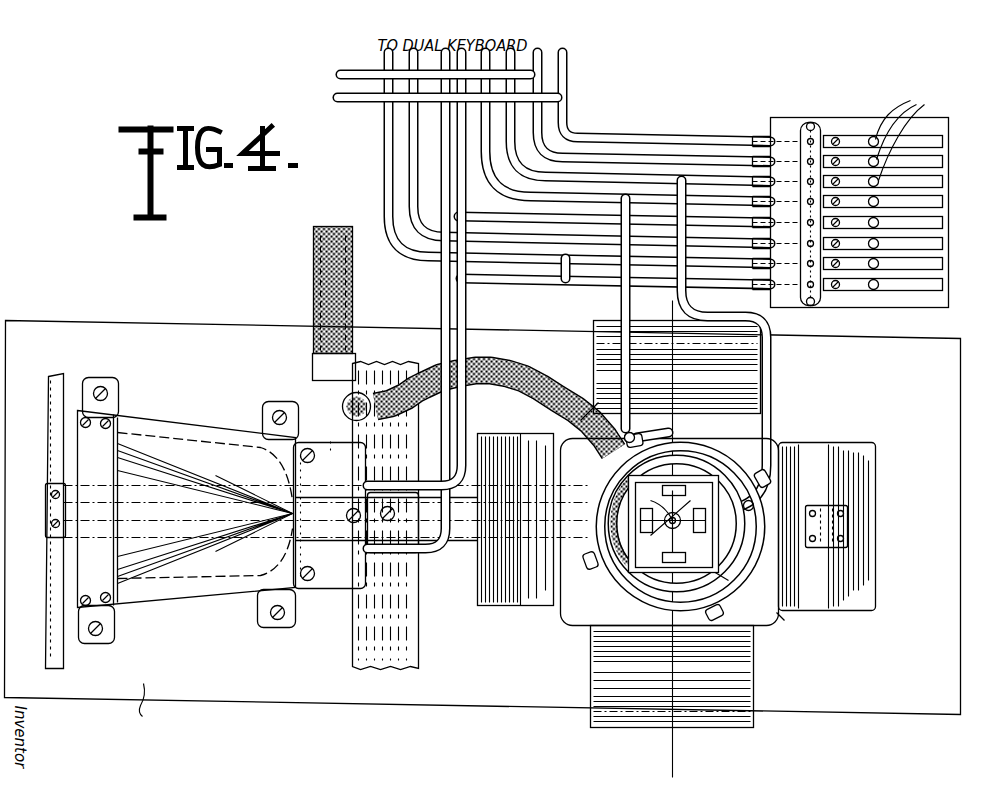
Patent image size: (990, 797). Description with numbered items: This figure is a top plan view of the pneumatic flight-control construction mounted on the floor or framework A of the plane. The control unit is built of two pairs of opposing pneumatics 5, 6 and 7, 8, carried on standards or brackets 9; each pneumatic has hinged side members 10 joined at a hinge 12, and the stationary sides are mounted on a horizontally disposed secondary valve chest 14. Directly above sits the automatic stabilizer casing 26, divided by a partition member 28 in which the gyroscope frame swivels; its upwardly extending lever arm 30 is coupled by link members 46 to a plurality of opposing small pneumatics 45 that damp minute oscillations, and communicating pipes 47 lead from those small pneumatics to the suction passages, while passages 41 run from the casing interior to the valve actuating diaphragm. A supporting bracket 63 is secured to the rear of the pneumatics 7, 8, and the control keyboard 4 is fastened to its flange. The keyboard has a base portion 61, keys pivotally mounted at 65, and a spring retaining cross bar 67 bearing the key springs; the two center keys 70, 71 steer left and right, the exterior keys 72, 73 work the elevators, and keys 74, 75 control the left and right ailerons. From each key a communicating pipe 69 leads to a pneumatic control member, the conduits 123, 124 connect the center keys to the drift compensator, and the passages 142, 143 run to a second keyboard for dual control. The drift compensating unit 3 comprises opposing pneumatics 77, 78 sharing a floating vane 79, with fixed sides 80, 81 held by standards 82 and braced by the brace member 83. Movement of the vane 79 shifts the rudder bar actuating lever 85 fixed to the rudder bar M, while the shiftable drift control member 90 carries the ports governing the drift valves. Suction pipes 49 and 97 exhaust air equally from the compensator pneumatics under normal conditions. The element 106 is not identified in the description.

The passage 142 is at (347, 72).
The passage 143 is at (344, 97).
The communicating pipe 69 is at (545, 73).
The conduit 123 is at (438, 298).
The conduit 124 is at (463, 299).
The control keyboard 4 is at (942, 120).
The base portion 61 is at (862, 120).
The pivot 65 is at (900, 116).
The spring retaining cross bar 67 is at (805, 195).
The key 73 is at (945, 183).
The key 75 is at (945, 203).
The key 71 is at (944, 225).
The key 70 is at (944, 245).
The key 74 is at (944, 265).
The key 72 is at (944, 286).
The hinged side member 10 is at (756, 292).
The pneumatic 8 is at (662, 306).
The pneumatic 5 is at (722, 357).
The hinge 12 is at (768, 432).
The pipe 49 is at (330, 232).
The pipe 97 is at (315, 440).
The rudder bar M is at (368, 650).
The framework A is at (140, 709).
The drift compensating unit 3 is at (148, 427).
The brace member 83 is at (80, 452).
The drift control member 90 is at (55, 485).
The support bar 106 is at (48, 414).
The standard 82 is at (100, 379).
The fixed side 81 is at (246, 440).
The fixed side 80 is at (198, 598).
The pneumatic 78 is at (170, 440).
The pneumatic 77 is at (164, 590).
The rudder bar actuating lever 85 is at (190, 488).
The floating vane 79 is at (228, 497).
The pneumatic 7 is at (498, 602).
The pneumatic 6 is at (590, 676).
The bracket 9 is at (778, 438).
The secondary valve chest 14 is at (786, 620).
The supporting bracket 63 is at (838, 522).
The communicating pipe 47 is at (685, 448).
The passage 41 is at (660, 446).
The partition member 28 is at (738, 572).
The stabilizer casing 26 is at (690, 480).
The small pneumatic 45 is at (686, 490).
The link member 46 is at (655, 512).
The lever arm 30 is at (665, 528).